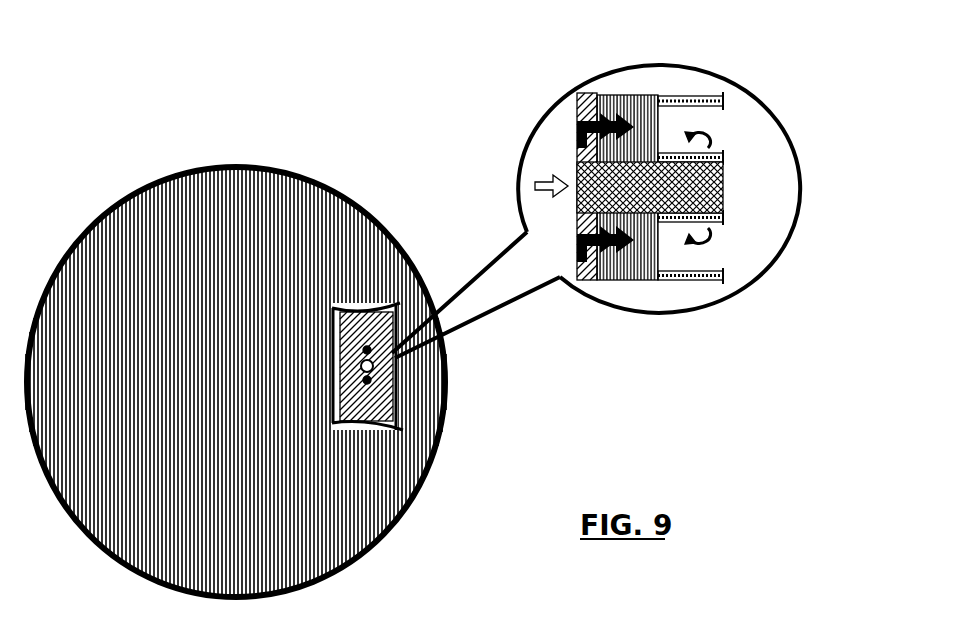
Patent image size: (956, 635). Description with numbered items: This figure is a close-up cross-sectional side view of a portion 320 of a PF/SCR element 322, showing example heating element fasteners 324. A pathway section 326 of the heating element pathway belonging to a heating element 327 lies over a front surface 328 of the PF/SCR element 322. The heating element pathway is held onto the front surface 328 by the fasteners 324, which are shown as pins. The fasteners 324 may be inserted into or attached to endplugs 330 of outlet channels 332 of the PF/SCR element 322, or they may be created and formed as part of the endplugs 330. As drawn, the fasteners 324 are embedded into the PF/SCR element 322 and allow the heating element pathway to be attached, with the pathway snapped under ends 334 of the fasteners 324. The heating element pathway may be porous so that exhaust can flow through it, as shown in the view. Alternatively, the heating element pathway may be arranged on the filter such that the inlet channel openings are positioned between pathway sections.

The portion 320 is at (727, 73).
The PF/SCR element 322 is at (190, 165).
The heating element fasteners 324 is at (405, 262).
The pathway section 326 is at (430, 295).
The heating element 327 is at (577, 95).
The front surface 328 is at (413, 505).
The endplugs 330 is at (633, 95).
The outlet channels 332 is at (713, 128).
The ends 334 is at (575, 141).